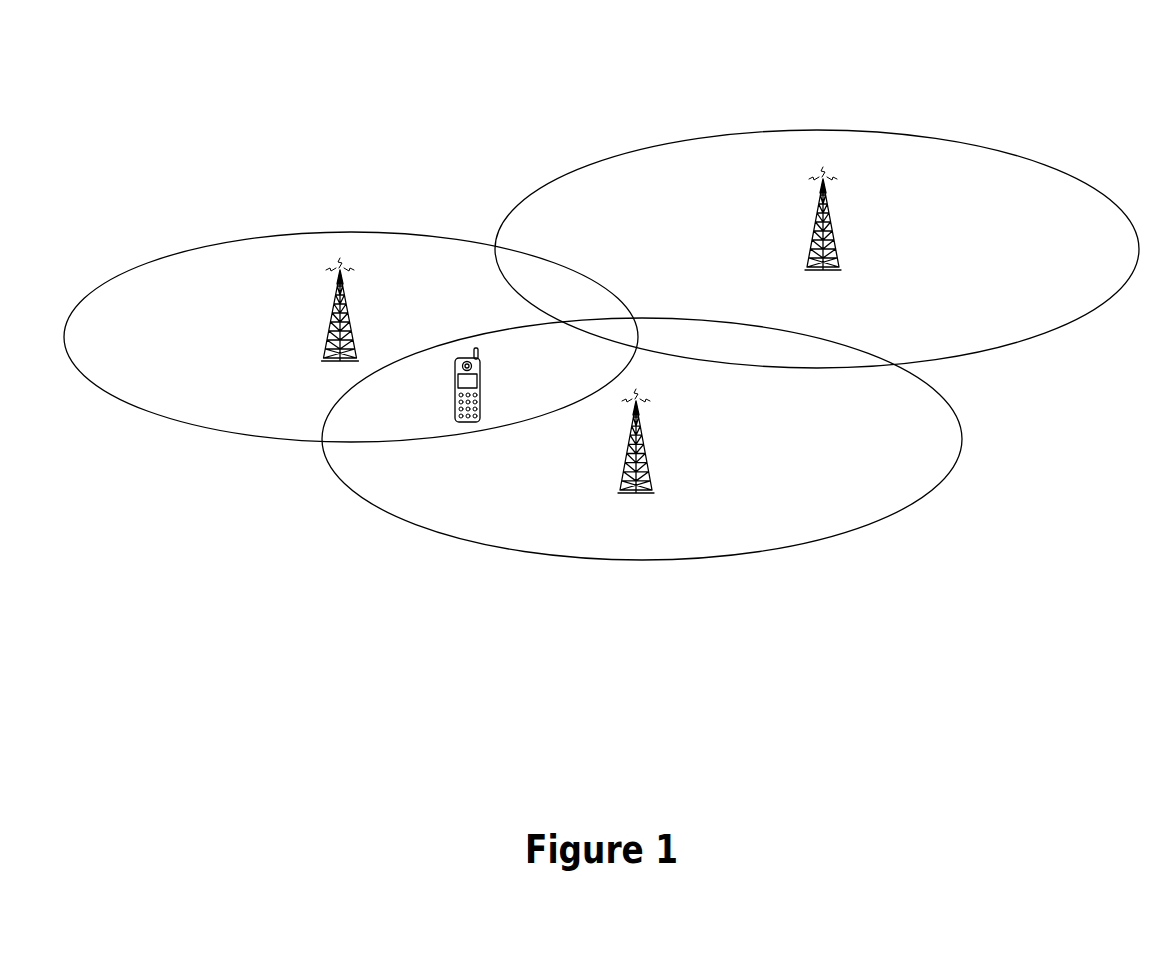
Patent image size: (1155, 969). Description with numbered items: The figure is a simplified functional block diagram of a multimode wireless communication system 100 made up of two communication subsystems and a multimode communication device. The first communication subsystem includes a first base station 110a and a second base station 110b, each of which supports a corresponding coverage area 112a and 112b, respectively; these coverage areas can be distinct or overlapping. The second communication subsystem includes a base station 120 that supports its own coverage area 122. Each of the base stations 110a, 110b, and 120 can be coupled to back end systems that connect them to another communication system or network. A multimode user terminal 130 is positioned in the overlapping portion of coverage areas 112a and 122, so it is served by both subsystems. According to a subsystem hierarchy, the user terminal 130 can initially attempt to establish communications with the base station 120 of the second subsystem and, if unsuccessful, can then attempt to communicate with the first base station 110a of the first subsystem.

The multimode wireless communication system 100 is at (1045, 46).
The first base station 110a is at (692, 478).
The second base station 110b is at (880, 255).
The coverage area 112a is at (857, 535).
The coverage area 112b is at (992, 352).
The base station 120 is at (323, 352).
The coverage area 122 is at (212, 241).
The multimode user terminal 130 is at (488, 400).